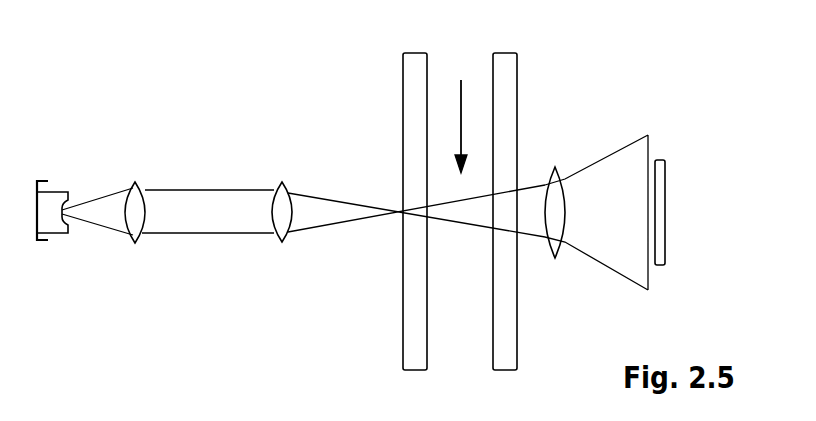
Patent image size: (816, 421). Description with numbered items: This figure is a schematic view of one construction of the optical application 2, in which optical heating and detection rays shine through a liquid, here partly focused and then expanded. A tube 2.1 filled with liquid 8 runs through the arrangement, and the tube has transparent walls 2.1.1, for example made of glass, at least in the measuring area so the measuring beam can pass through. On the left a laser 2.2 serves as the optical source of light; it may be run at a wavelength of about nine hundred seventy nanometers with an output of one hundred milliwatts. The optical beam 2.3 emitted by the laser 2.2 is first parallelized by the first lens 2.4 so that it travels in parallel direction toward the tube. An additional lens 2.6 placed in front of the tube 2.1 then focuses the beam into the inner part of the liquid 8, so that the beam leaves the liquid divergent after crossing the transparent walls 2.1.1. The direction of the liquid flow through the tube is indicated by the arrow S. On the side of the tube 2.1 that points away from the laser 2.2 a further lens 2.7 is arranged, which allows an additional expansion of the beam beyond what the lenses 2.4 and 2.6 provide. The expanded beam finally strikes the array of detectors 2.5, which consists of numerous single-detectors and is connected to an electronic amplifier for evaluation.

The optical application 2 is at (650, 98).
The tube 2.1 is at (548, 57).
The transparent walls 2.1.1 is at (460, 211).
The laser 2.2 is at (60, 186).
The optical beam 2.3 is at (212, 222).
The first lens 2.4 is at (135, 206).
The array of detectors 2.5 is at (666, 195).
The additional lens 2.6 is at (283, 205).
The additional lens 2.7 is at (558, 202).
The liquid 8 is at (440, 305).
The direction of liquid flow S is at (462, 88).